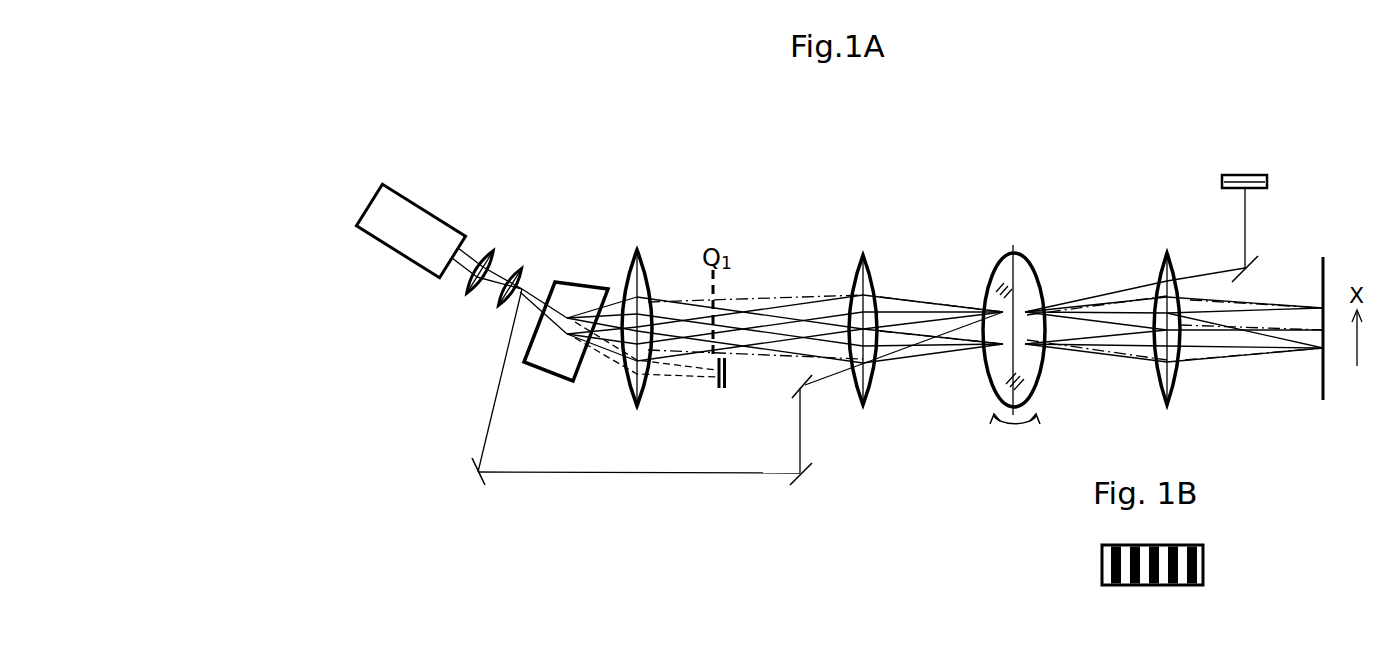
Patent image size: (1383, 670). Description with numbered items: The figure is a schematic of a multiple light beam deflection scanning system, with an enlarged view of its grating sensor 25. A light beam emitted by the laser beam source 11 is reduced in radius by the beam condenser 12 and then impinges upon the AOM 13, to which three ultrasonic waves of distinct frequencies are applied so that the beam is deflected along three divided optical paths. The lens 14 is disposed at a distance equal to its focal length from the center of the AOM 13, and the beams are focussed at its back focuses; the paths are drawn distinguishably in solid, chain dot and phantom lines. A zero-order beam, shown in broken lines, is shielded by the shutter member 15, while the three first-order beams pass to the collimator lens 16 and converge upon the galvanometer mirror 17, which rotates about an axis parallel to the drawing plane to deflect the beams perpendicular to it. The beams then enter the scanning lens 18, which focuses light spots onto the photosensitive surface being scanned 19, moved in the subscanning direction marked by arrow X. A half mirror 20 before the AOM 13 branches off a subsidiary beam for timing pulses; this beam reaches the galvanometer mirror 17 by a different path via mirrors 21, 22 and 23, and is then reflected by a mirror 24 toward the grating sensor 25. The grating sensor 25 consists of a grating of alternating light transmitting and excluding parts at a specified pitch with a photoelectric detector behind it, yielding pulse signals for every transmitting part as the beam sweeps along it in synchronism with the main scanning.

In FIG. 1A, the laser beam source 11 is at (433, 213).
In FIG. 1A, the beam condenser 12 is at (489, 240).
In FIG. 1A, the AOM 13 is at (575, 280).
In FIG. 1A, the lens 14 is at (641, 260).
In FIG. 1A, the shutter member 15 is at (724, 390).
In FIG. 1A, the collimator lens 16 is at (867, 260).
In FIG. 1A, the galvanometer mirror 17 is at (1025, 262).
In FIG. 1A, the scanning lens 18 is at (1172, 262).
In FIG. 1A, the photosensitive surface being scanned 19 is at (1321, 266).
In FIG. 1A, the half mirror 20 is at (528, 286).
In FIG. 1A, the mirror 21 is at (471, 475).
In FIG. 1A, the mirror 22 is at (806, 478).
In FIG. 1A, the mirror 23 is at (795, 395).
In FIG. 1A, the mirror 24 is at (1256, 266).
In FIG. 1A, the grating sensor 25 is at (1247, 175).
In FIG. 1B, the grating sensor 25 is at (1153, 586).